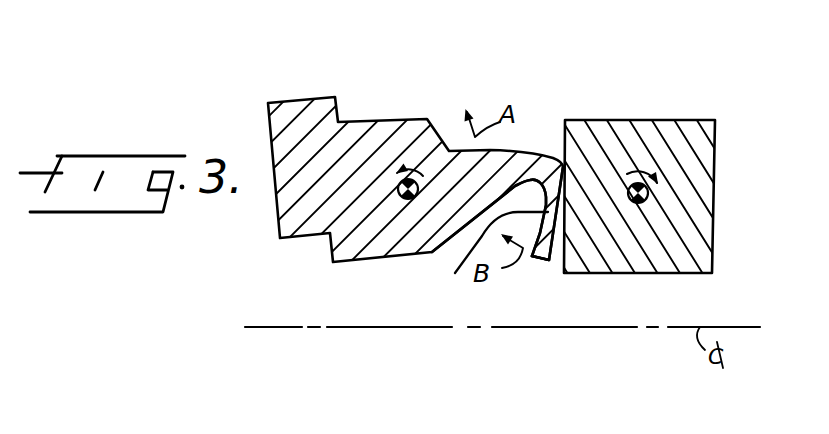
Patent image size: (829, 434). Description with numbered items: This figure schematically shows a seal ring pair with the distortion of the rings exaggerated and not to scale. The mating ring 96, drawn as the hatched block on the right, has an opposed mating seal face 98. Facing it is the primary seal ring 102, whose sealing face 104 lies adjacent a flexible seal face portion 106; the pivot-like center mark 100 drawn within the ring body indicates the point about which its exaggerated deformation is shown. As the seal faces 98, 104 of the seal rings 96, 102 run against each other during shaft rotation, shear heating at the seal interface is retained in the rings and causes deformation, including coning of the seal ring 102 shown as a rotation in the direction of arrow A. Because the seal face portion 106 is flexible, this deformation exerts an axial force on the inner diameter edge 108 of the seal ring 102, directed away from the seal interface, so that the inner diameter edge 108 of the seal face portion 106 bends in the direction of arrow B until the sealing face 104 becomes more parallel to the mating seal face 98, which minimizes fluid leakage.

The mating ring 96 is at (672, 127).
The mating seal face 98 is at (557, 262).
The pawl pivot axis 100 is at (408, 200).
The seal ring 102 is at (381, 139).
The sealing face 104 is at (563, 167).
The seal face portion 106 is at (456, 272).
The inner diameter edge 108 is at (549, 261).